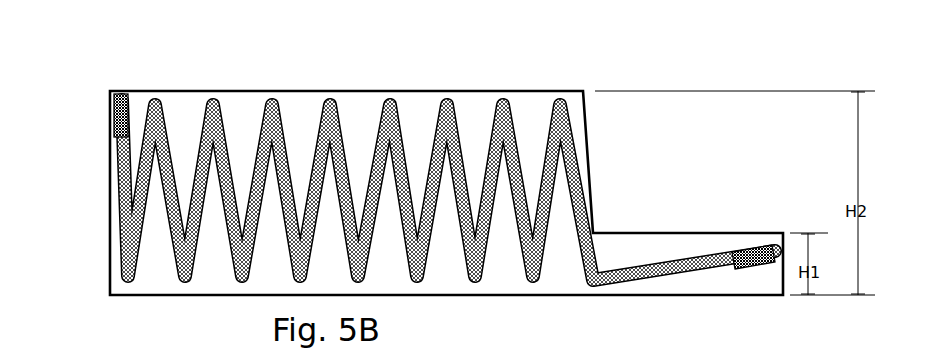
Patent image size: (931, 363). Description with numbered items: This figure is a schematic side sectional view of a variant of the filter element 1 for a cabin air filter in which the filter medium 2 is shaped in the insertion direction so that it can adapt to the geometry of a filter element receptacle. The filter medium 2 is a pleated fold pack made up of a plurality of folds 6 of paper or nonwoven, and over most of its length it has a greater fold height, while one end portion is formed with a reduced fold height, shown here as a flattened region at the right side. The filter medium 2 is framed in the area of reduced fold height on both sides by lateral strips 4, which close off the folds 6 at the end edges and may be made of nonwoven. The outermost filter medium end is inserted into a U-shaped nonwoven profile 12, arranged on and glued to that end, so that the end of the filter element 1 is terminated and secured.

The filter element 1 is at (94, 140).
The filter medium 2 is at (403, 122).
The lateral strips 4 is at (215, 268).
The folds 6 is at (268, 100).
The U-shaped nonwoven profile 12 is at (123, 92).